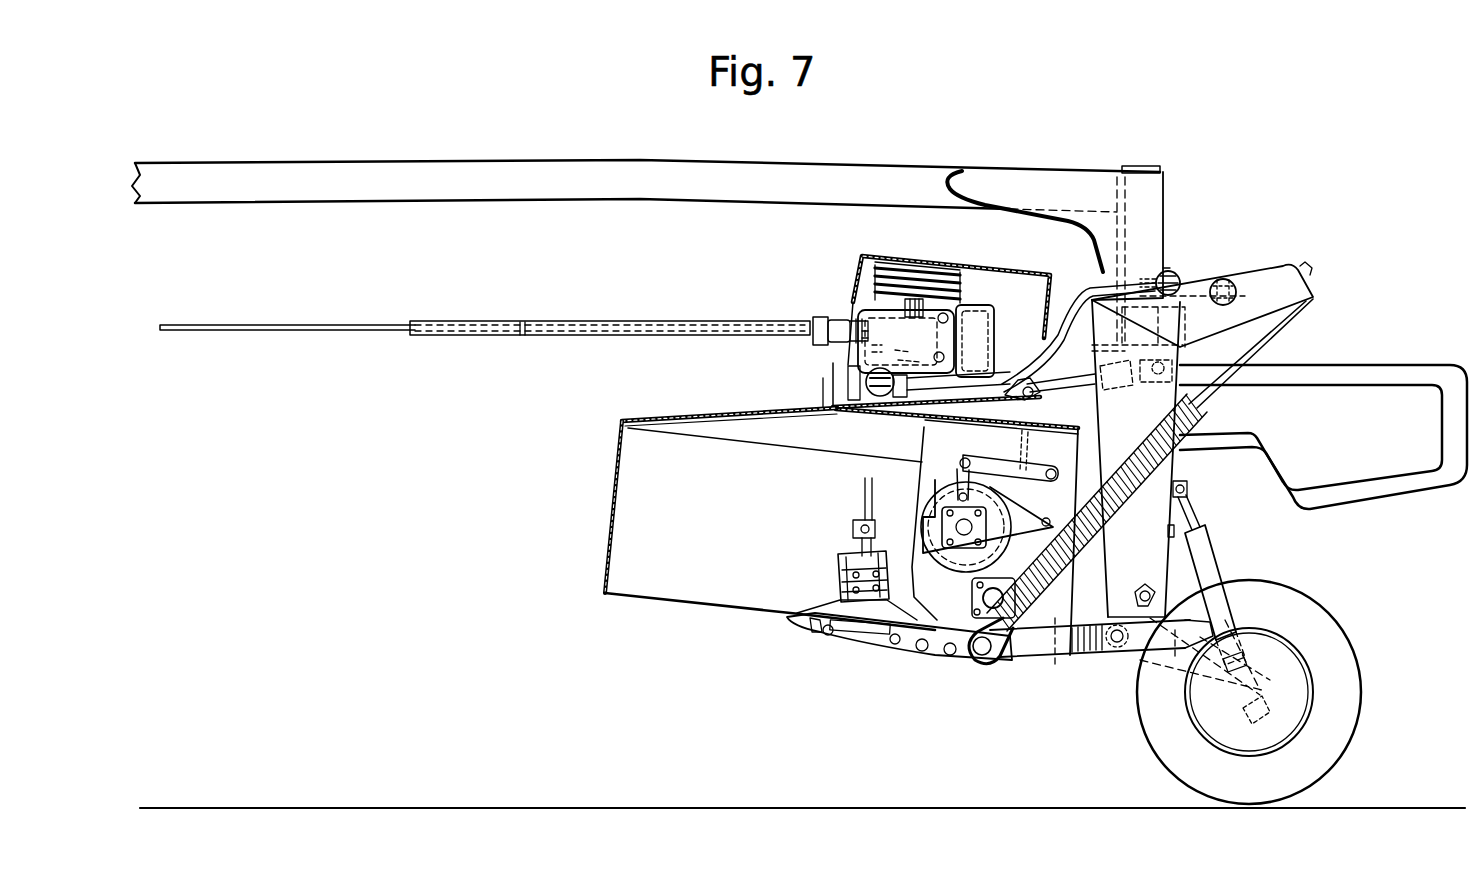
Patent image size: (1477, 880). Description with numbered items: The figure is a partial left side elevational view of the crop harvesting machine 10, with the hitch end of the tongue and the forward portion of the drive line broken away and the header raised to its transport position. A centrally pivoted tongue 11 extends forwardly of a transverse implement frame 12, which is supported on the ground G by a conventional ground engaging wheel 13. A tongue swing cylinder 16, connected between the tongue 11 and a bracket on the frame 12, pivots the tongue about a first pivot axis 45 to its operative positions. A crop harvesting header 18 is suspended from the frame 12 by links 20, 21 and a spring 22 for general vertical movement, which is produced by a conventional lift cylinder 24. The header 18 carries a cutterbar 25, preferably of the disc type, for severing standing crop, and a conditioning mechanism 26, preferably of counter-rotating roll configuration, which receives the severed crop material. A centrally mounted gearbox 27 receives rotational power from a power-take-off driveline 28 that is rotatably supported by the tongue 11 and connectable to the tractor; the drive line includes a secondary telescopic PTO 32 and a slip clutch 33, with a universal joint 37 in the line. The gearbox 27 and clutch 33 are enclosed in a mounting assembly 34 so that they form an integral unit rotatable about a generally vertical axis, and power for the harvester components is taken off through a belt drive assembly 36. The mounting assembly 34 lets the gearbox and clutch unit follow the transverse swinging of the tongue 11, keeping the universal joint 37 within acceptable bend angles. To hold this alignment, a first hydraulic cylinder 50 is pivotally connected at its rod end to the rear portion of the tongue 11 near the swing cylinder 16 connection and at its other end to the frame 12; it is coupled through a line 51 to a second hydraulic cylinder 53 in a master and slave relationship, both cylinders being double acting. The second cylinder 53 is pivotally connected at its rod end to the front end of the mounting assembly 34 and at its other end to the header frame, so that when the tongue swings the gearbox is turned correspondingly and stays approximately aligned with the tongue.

The crop harvesting machine 10 is at (428, 122).
The tongue 11 is at (630, 175).
The transverse implement frame 12 is at (1283, 263).
The ground engaging wheel 13 is at (1312, 596).
The tongue swing cylinder 16 is at (1222, 292).
The crop harvesting header 18 is at (756, 646).
The link 20 is at (1070, 652).
The link 21 is at (1102, 374).
The spring 22 is at (1132, 507).
The lift cylinder 24 is at (1200, 568).
The cutterbar 25 is at (830, 578).
The conditioning mechanism 26 is at (941, 600).
The gearbox 27 is at (977, 325).
The power-take-off driveline 28 is at (425, 320).
The secondary telescopic PTO 32 is at (557, 326).
The slip clutch 33 is at (933, 333).
The mounting assembly 34 is at (1005, 312).
The belt drive assembly 36 is at (958, 262).
The universal joint 37 is at (826, 316).
The first pivot axis 45 is at (1148, 172).
The first hydraulic cylinder 50 is at (1172, 280).
The hydraulic line 51 is at (1090, 292).
The second hydraulic cylinder 53 is at (840, 394).
The ground G is at (394, 806).